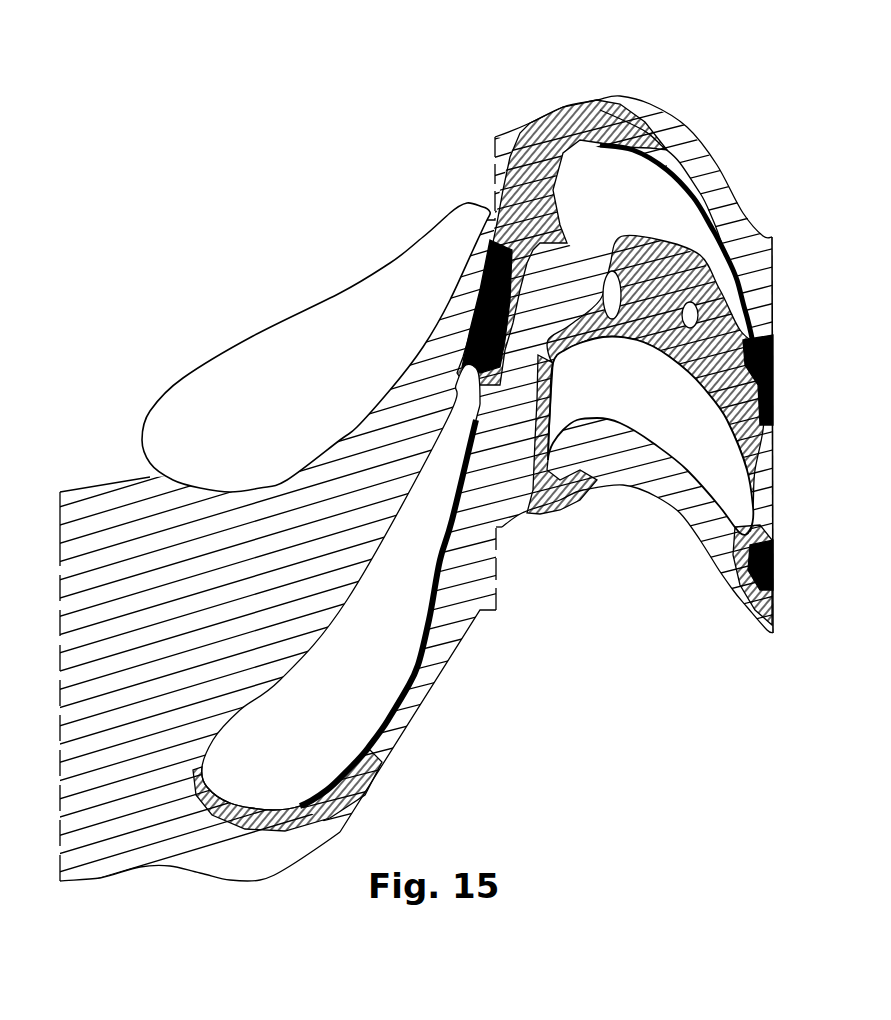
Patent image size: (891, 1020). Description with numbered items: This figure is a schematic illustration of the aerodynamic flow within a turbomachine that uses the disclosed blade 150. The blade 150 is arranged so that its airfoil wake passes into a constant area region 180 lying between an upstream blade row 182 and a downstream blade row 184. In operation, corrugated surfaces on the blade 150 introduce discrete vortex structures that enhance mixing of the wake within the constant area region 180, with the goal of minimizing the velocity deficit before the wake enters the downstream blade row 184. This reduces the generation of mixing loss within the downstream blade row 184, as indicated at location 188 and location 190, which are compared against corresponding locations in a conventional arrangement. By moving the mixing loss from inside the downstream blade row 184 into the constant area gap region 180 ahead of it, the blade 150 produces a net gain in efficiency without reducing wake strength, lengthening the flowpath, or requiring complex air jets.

The blade 150 is at (362, 707).
The constant area region 180 is at (532, 459).
The blade row 182 is at (260, 288).
The downstream blade row 184 is at (615, 60).
The location 188 is at (690, 258).
The location 190 is at (790, 398).